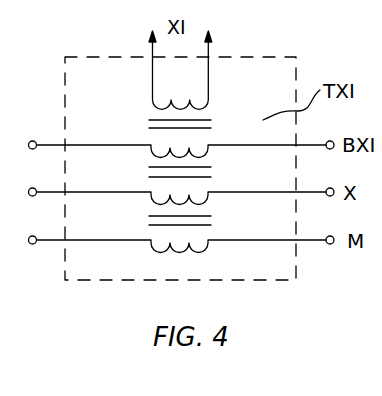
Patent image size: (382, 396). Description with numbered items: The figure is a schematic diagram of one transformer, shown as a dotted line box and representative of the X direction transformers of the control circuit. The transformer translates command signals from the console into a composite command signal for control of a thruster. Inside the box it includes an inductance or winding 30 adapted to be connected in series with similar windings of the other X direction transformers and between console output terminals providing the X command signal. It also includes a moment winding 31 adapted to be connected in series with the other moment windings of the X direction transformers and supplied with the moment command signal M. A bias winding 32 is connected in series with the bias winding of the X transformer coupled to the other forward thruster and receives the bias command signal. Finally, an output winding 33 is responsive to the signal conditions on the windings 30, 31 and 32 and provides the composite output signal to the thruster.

The winding 30 is at (210, 199).
The moment winding 31 is at (210, 250).
The bias winding 32 is at (210, 151).
The output winding 33 is at (209, 101).